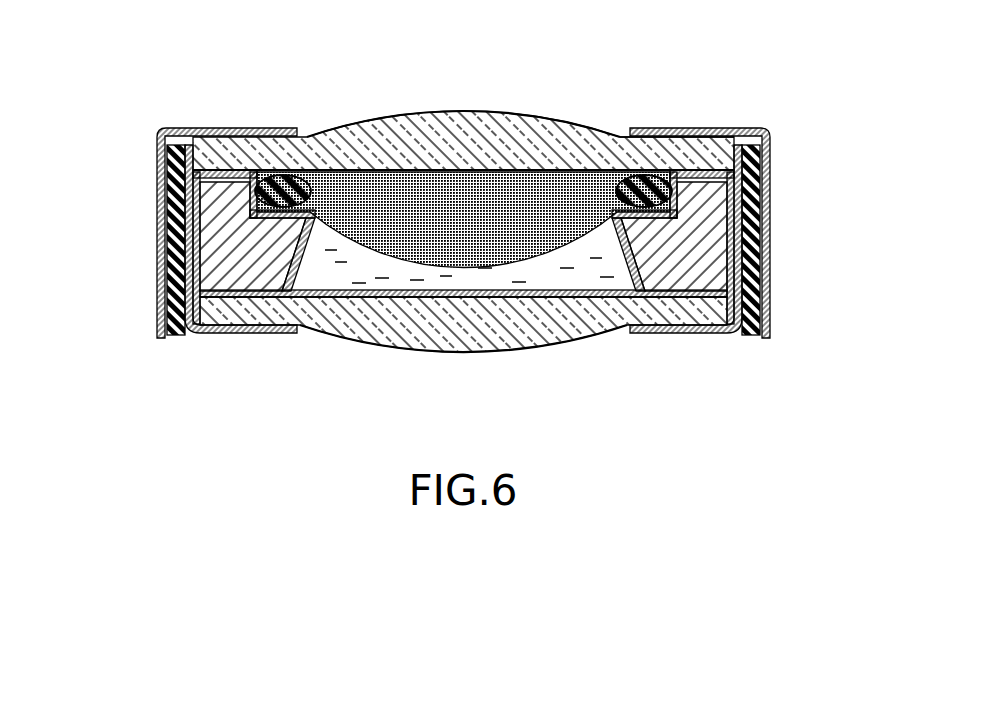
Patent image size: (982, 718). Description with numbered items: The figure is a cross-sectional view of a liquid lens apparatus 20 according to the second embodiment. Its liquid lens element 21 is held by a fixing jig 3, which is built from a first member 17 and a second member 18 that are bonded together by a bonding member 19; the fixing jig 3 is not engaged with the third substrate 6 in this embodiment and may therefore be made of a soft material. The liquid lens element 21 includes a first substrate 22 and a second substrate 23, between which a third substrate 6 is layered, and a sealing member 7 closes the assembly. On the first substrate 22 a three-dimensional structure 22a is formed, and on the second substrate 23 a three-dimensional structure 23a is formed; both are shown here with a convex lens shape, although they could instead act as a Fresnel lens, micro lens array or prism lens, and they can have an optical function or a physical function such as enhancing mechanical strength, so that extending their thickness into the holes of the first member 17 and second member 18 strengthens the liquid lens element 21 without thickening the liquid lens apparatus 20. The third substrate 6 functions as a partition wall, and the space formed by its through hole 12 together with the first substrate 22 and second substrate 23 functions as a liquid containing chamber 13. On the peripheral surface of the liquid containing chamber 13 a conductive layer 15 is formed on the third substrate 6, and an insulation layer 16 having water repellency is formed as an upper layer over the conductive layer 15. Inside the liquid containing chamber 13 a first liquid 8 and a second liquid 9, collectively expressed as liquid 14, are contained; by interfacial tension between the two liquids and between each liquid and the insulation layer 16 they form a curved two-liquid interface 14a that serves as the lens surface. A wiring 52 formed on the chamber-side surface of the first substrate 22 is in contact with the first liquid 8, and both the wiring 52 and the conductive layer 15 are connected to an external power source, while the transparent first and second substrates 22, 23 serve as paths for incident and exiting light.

The fixing jig 3 is at (73, 165).
The third substrate 6 is at (241, 262).
The sealing member 7 is at (310, 135).
The first liquid 8 is at (367, 138).
The second liquid 9 is at (333, 138).
The through hole 12 is at (283, 255).
The liquid containing chamber 13 is at (544, 262).
The liquid 14 is at (393, 74).
The two-liquid interface 14a is at (600, 245).
The conductive layer 15 is at (220, 310).
The insulation layer 16 is at (398, 300).
The first member 17 is at (160, 190).
The second member 18 is at (165, 258).
The bonding member 19 is at (163, 223).
The liquid lens apparatus 20 is at (787, 93).
The liquid lens element 21 is at (547, 84).
The first substrate 22 is at (430, 137).
The three-dimensional structure 22a is at (473, 122).
The second substrate 23 is at (452, 310).
The three-dimensional structure 23a is at (495, 330).
The wiring 52 is at (582, 140).